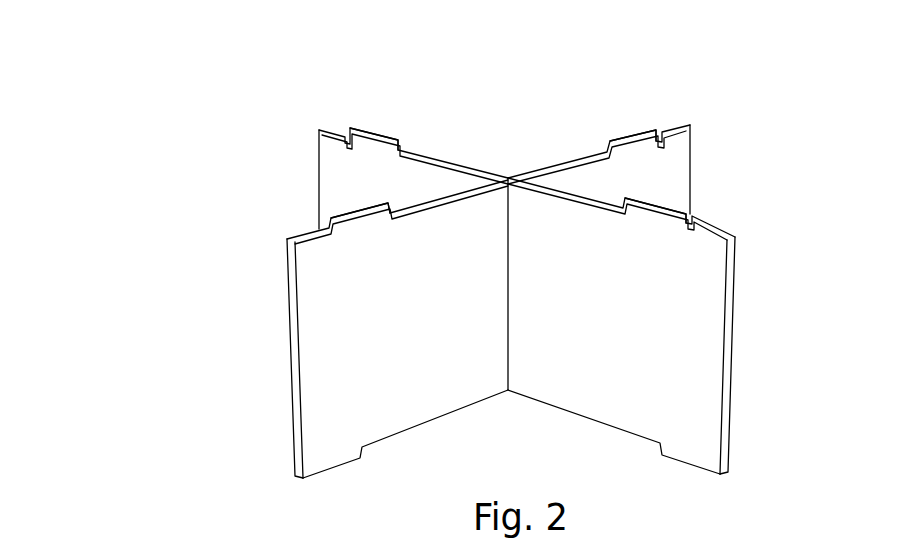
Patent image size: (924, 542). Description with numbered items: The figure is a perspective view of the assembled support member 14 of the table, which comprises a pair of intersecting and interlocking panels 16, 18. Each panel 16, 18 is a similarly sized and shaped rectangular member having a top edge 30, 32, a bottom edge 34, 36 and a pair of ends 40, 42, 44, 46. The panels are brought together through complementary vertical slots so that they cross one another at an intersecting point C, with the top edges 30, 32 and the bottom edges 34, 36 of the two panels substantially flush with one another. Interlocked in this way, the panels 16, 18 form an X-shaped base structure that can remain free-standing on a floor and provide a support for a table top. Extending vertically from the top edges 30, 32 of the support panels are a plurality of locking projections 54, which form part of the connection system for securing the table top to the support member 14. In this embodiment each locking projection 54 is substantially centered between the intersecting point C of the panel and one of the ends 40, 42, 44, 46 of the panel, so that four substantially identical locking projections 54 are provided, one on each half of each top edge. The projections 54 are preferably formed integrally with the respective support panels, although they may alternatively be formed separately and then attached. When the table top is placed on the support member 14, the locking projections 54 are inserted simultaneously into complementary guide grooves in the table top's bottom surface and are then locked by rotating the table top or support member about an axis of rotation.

The support member 14 is at (135, 105).
The panel 16 is at (385, 408).
The panel 18 is at (625, 382).
The top edge 30 is at (573, 154).
The top edge 32 is at (443, 156).
The bottom edge 34 is at (452, 412).
The bottom edge 36 is at (573, 413).
The end 40 is at (293, 358).
The end 42 is at (692, 151).
The end 44 is at (727, 352).
The end 46 is at (318, 186).
The locking projection 54 is at (378, 134).
The intersecting point C is at (508, 178).